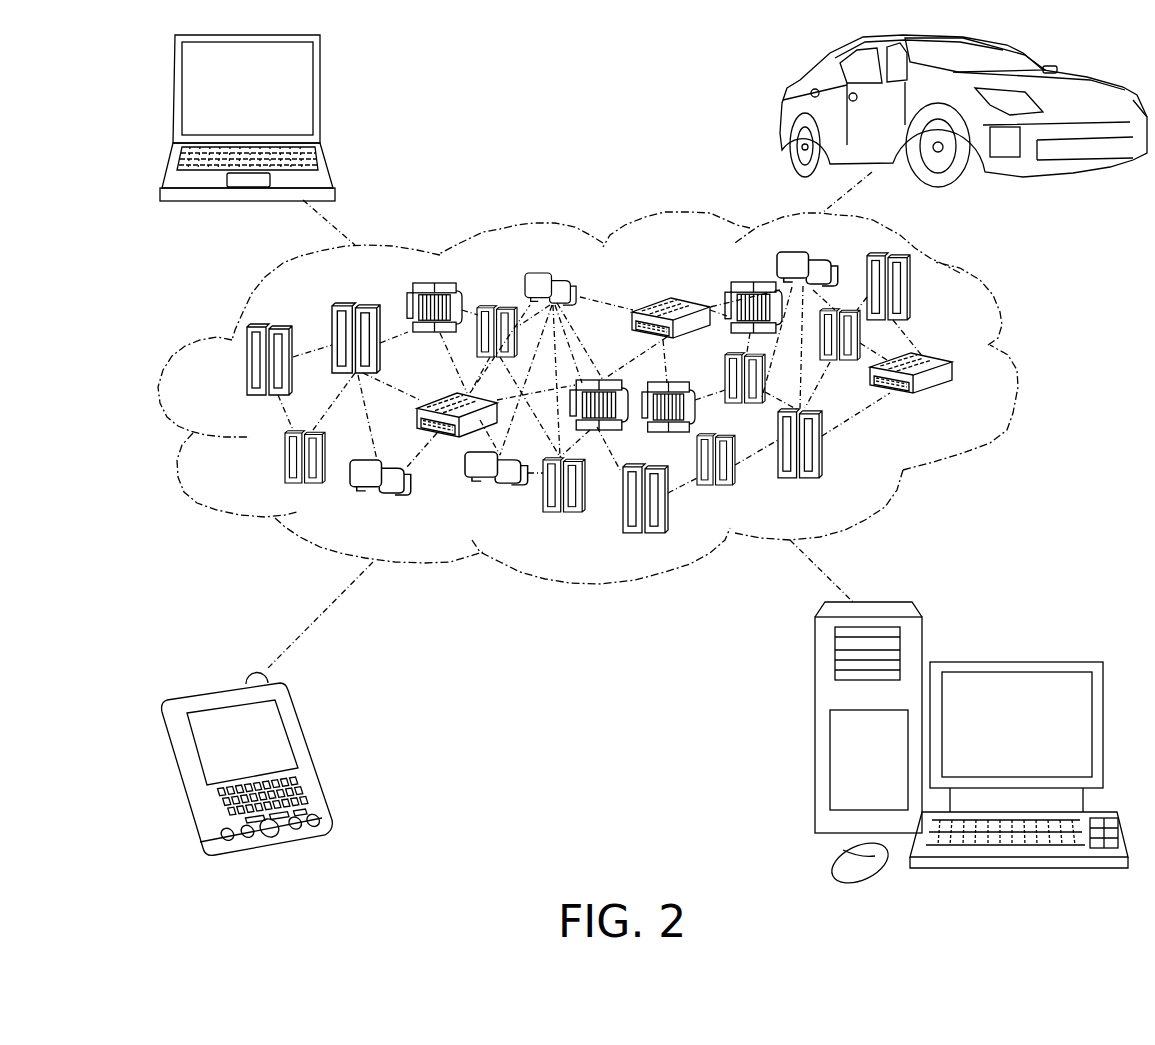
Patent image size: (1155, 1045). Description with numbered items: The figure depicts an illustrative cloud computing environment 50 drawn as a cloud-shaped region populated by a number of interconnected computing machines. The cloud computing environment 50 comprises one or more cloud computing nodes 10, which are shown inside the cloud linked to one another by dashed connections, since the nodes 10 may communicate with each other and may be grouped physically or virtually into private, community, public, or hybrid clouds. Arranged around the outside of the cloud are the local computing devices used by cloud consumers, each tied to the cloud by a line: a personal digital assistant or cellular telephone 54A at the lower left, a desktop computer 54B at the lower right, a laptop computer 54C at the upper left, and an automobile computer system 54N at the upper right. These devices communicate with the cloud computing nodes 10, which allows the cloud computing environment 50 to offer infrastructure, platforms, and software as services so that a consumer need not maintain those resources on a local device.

The laptop computer 54C is at (320, 97).
The automobile computer system 54N is at (778, 112).
The personal digital assistant (PDA) or cellular telephone 54A is at (310, 757).
The desktop computer 54B is at (1015, 662).
The cloud computing environment 50 is at (1010, 368).
The cloud computing node 10 is at (952, 400).